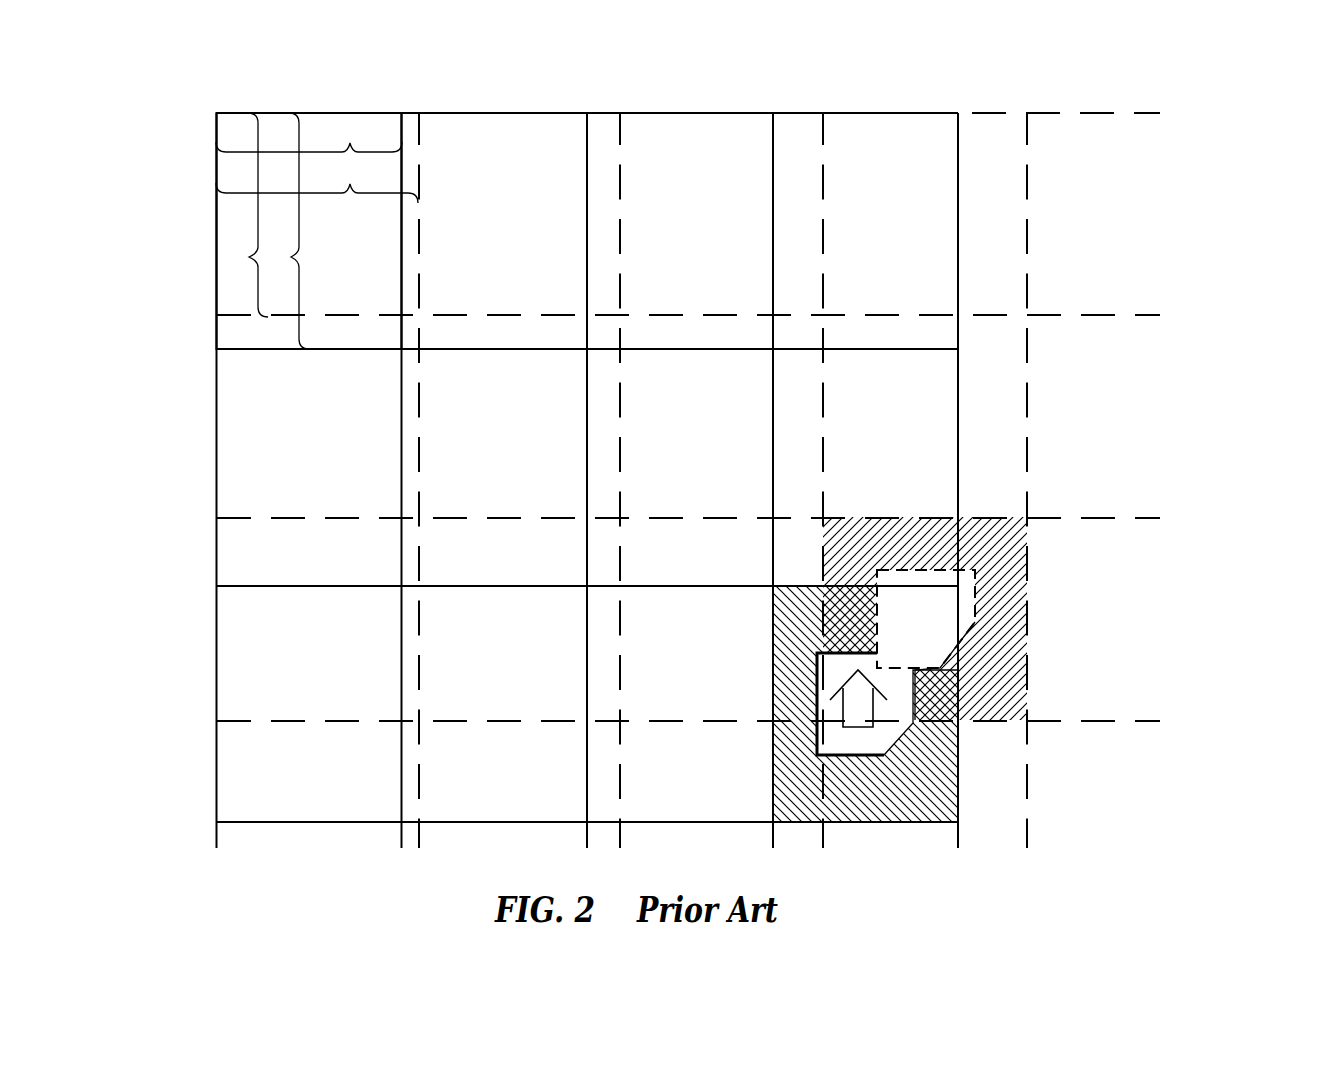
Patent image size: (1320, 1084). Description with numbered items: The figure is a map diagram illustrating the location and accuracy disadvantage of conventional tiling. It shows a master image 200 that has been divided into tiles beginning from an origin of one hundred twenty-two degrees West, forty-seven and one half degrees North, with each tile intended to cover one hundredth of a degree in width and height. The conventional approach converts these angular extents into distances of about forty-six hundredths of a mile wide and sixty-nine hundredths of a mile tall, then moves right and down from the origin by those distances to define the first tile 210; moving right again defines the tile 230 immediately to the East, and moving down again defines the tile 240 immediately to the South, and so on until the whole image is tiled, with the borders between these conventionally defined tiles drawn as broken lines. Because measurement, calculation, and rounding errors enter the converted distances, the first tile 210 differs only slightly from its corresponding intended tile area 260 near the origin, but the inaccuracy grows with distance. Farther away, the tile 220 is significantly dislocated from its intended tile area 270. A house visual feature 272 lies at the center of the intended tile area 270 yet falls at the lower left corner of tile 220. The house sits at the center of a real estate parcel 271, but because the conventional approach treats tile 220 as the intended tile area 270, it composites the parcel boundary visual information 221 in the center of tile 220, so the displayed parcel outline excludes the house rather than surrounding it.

The master image 200 is at (1178, 162).
The first tile 210 is at (408, 122).
The tile 220 is at (1017, 563).
The parcel boundary visual information 221 is at (937, 613).
The tile 230 is at (602, 123).
The tile 240 is at (227, 335).
The intended tile area 260 is at (353, 113).
The intended tile area 270 is at (938, 798).
The real estate parcel 271 is at (875, 752).
The house visual feature 272 is at (868, 667).